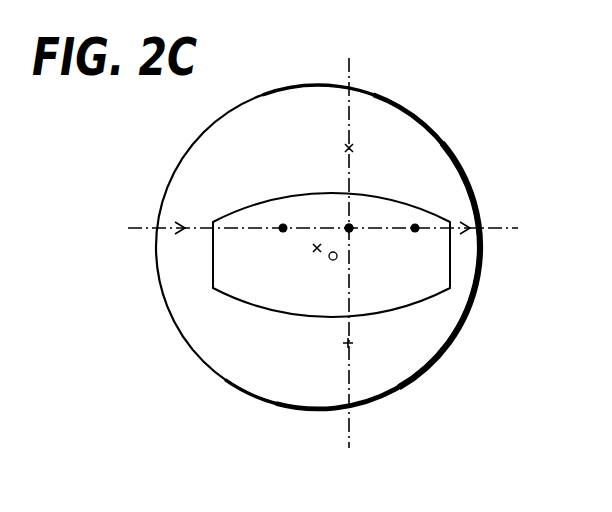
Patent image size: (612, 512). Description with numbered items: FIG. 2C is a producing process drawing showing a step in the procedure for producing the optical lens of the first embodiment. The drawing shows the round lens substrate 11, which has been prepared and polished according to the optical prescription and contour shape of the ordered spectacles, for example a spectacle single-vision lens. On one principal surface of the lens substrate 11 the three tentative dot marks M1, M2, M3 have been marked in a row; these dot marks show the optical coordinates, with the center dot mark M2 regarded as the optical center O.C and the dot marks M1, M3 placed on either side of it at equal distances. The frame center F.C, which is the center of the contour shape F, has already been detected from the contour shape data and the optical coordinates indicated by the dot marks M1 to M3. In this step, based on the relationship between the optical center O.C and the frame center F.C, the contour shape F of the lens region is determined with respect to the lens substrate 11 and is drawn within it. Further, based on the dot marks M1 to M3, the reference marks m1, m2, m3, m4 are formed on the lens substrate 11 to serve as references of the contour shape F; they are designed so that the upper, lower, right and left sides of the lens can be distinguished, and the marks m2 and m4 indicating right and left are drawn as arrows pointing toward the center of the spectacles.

The lens substrate 11 is at (395, 101).
The contour shape F is at (392, 196).
The reference mark m1 is at (349, 148).
The reference mark m2 is at (468, 232).
The reference mark m3 is at (349, 345).
The reference mark m4 is at (184, 232).
The dot mark M1 is at (284, 226).
The center dot mark M2 is at (350, 226).
The dot mark M3 is at (416, 226).
The optical center O.C is at (349, 230).
The frame center F.C is at (334, 260).